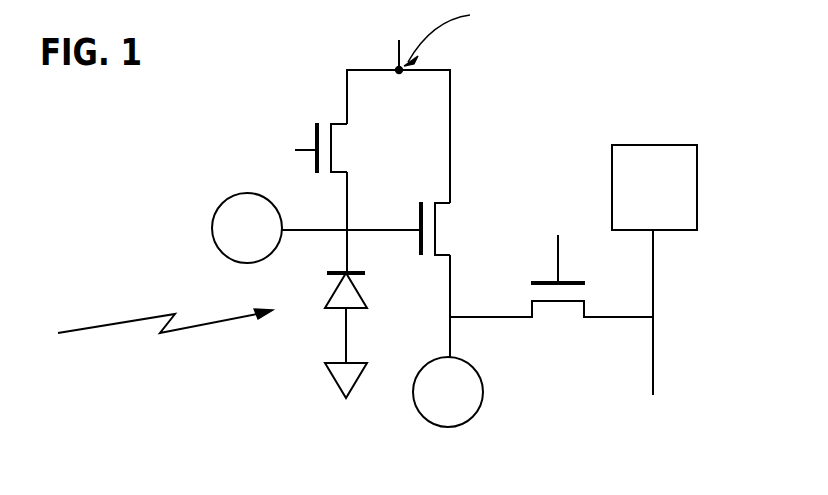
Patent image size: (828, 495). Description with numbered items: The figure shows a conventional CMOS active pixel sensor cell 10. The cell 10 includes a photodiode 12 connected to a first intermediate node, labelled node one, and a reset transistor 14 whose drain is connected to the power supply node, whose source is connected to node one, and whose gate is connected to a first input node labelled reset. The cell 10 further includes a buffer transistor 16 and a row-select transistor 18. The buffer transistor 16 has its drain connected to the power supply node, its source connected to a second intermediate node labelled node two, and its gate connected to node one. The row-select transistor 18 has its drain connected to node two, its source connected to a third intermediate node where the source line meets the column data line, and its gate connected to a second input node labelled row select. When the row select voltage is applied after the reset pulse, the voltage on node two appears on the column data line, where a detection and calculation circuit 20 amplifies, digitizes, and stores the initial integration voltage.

The CMOS active pixel sensor cell 10 is at (258, 426).
The photodiode 12 is at (355, 290).
The reset transistor 14 is at (331, 152).
The buffer transistor 16 is at (436, 228).
The row-select transistor 18 is at (558, 302).
The detection and calculation circuit 20 is at (670, 201).